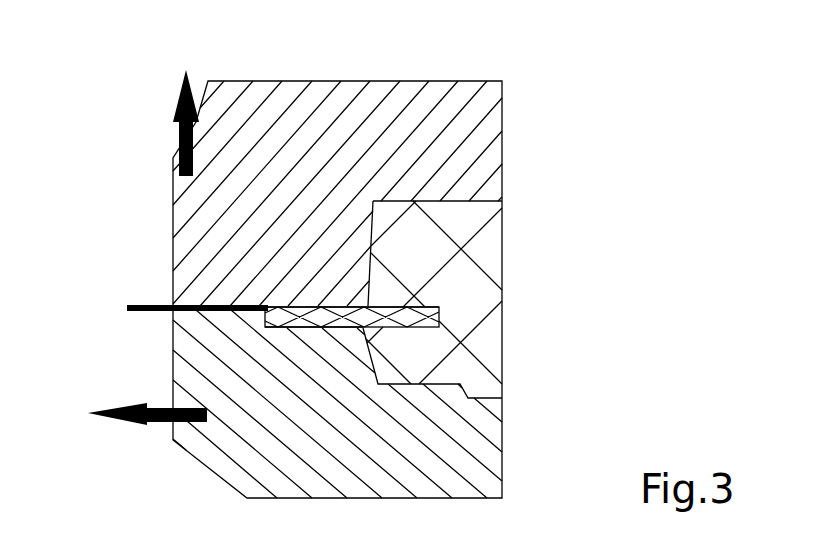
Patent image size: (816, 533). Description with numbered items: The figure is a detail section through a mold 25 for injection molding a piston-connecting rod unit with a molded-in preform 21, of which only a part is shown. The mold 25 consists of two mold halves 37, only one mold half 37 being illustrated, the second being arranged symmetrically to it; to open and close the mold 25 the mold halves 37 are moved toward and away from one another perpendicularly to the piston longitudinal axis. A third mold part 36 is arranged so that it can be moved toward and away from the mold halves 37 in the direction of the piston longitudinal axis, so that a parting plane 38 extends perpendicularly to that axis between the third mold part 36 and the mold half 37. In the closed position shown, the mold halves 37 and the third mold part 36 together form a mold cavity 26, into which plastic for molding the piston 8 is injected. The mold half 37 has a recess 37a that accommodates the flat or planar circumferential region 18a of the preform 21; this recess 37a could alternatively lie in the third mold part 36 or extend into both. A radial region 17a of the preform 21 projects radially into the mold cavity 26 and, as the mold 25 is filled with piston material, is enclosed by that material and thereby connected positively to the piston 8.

The mold 25 is at (428, 62).
The third mold part 36 is at (470, 119).
The mold half 37 is at (472, 442).
The mold cavity 26 is at (455, 204).
The preform 21 is at (374, 301).
The piston 8 is at (467, 281).
The radial region 17a is at (440, 314).
The planar circumferential region 18a is at (277, 305).
The recess 37a is at (307, 329).
The parting plane 38 is at (137, 306).